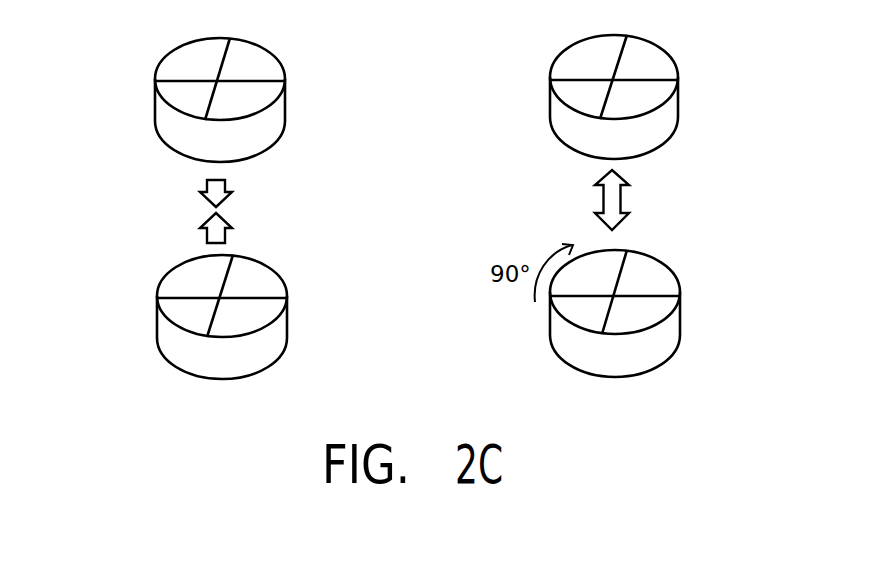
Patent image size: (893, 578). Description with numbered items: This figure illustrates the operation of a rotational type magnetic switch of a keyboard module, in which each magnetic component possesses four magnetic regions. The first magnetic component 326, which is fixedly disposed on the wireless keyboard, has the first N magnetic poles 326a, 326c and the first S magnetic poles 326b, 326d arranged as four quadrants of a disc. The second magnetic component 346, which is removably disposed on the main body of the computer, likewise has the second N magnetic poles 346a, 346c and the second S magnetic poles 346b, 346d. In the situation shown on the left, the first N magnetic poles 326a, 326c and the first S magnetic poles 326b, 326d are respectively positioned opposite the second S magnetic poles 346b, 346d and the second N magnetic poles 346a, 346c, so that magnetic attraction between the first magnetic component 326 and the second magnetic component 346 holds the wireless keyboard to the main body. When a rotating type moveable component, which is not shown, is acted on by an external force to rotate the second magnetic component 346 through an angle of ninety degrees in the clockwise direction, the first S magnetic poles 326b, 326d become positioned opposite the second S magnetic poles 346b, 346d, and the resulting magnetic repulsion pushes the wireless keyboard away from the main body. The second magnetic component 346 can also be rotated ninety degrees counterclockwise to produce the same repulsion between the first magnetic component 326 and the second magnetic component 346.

The first magnetic component 326 is at (774, 92).
The first N magnetic pole 326a is at (160, 63).
The first S magnetic pole 326b is at (278, 56).
The first N magnetic pole 326c is at (274, 110).
The first S magnetic pole 326d is at (160, 104).
The second magnetic component 346 is at (774, 318).
The second N magnetic pole 346a is at (162, 313).
The second S magnetic pole 346b is at (162, 278).
The second N magnetic pole 346c is at (280, 277).
The second S magnetic pole 346d is at (274, 322).